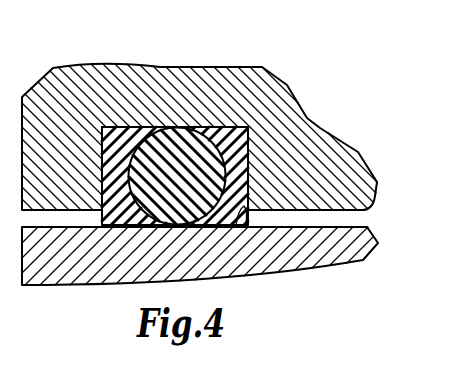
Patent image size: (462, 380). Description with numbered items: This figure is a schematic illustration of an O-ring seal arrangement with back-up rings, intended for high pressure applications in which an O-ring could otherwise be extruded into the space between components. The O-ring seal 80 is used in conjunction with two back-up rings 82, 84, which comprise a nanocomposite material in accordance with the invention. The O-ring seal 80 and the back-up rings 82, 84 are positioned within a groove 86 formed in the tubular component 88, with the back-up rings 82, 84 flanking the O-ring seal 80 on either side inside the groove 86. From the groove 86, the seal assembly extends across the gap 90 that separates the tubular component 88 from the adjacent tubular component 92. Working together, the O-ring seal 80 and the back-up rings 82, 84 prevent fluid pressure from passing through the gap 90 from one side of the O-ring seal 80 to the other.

The O-ring seal 80 is at (152, 197).
The back-up ring 82 is at (125, 127).
The back-up ring 84 is at (233, 127).
The groove 86 is at (243, 212).
The tubular component 88 is at (314, 162).
The gap 90 is at (345, 217).
The tubular component 92 is at (338, 253).